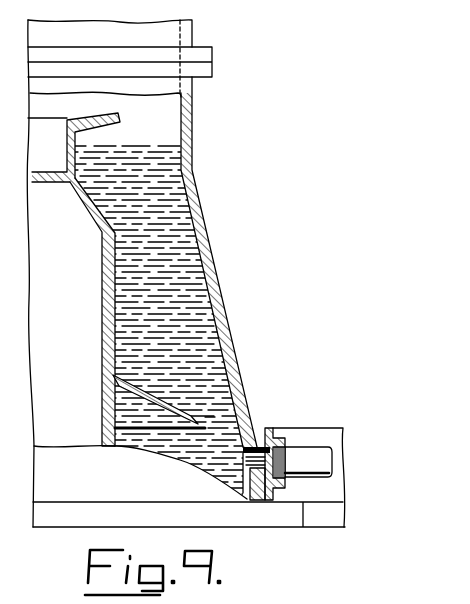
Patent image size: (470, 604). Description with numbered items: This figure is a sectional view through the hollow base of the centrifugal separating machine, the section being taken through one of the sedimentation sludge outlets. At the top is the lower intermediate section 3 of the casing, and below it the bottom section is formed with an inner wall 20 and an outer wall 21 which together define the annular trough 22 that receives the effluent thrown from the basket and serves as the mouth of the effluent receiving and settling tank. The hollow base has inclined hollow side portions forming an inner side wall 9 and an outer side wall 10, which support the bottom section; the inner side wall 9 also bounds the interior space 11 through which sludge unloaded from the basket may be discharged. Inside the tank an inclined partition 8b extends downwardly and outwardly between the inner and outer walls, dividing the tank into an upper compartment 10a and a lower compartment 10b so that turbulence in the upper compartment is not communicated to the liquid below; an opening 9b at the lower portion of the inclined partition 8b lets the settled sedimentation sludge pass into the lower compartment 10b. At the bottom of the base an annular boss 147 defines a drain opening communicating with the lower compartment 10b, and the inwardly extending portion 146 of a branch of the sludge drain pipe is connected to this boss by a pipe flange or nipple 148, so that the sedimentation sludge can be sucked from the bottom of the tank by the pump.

The lower intermediate section 3 is at (120, 56).
The inner wall 20 is at (67, 148).
The annular trough 22 is at (157, 274).
The outer wall 21 is at (193, 131).
The upper compartment 10a is at (177, 268).
The inner side wall 9 is at (112, 272).
The outer side wall 10 is at (213, 298).
The interior space 11 is at (186, 273).
The inclined partition 8b is at (193, 420).
The opening 9b is at (210, 417).
The annular boss 147 is at (262, 428).
The pipe flange 148 is at (283, 438).
The inwardly extending portion 146 is at (305, 457).
The lower compartment 10b is at (188, 460).